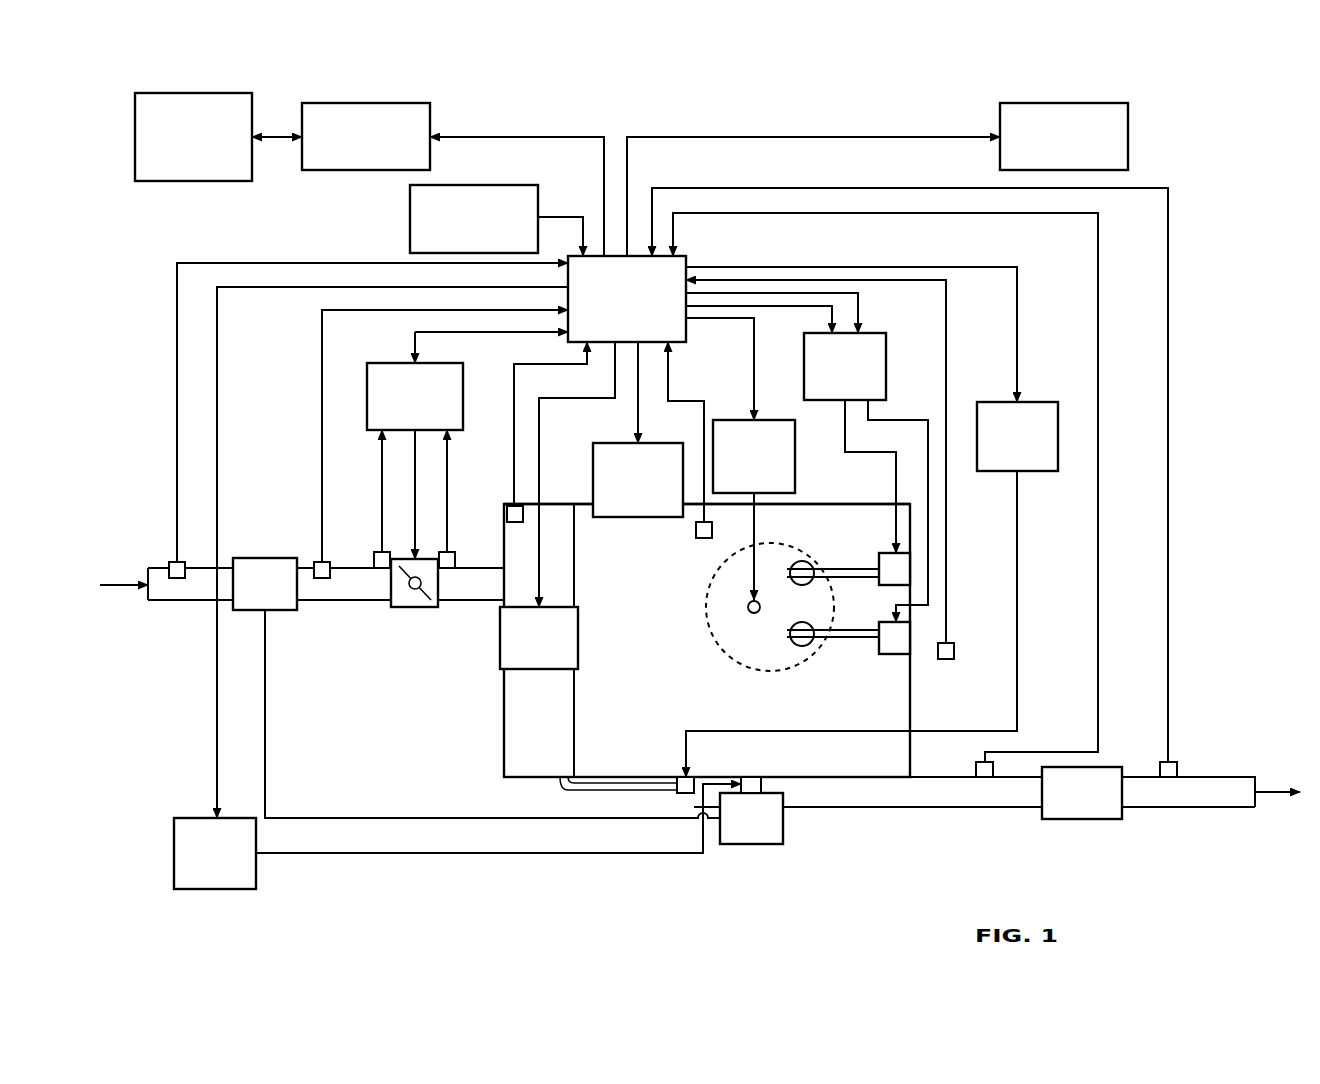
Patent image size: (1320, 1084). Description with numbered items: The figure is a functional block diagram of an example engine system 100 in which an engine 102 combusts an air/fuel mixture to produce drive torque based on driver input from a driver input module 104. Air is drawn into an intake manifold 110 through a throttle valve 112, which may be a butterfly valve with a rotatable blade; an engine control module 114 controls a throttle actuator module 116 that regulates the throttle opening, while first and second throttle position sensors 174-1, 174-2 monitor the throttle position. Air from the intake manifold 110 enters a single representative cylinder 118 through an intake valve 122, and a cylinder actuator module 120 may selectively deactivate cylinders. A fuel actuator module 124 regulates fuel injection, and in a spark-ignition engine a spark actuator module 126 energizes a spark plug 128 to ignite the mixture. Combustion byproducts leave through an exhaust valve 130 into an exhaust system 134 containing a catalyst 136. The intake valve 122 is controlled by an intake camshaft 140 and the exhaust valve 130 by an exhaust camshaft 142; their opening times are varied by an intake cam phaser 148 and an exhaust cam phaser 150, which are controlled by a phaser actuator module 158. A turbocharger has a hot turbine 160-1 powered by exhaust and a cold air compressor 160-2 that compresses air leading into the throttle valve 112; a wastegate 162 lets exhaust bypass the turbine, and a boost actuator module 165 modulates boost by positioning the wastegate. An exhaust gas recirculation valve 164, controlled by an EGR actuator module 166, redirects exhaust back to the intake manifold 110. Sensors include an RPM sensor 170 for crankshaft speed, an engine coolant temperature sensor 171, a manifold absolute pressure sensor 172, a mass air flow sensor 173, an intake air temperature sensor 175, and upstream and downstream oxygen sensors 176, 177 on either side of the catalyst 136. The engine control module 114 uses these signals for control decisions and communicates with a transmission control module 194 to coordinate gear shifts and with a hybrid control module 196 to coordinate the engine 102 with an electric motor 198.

The engine system 100 is at (1228, 105).
The engine 102 is at (815, 504).
The driver input module 104 is at (410, 215).
The intake manifold 110 is at (504, 716).
The throttle valve 112 is at (412, 607).
The engine control module 114 is at (686, 258).
The throttle actuator module 116 is at (390, 363).
The cylinder 118 is at (735, 672).
The cylinder actuator module 120 is at (652, 443).
The intake valve 122 is at (800, 561).
The fuel actuator module 124 is at (562, 669).
The spark actuator module 126 is at (733, 420).
The spark plug 128 is at (748, 607).
The exhaust valve 130 is at (808, 648).
The exhaust system 134 is at (547, 885).
The catalyst 136 is at (1082, 819).
The intake camshaft 140 is at (855, 569).
The exhaust camshaft 142 is at (860, 637).
The intake cam phaser 148 is at (884, 585).
The exhaust cam phaser 150 is at (898, 654).
The phaser actuator module 158 is at (886, 340).
The hot turbine 160-1 is at (783, 828).
The cold air compressor 160-2 is at (285, 610).
The wastegate 162 is at (761, 785).
The exhaust gas recirculation valve 164 is at (684, 795).
The boost actuator module 165 is at (256, 889).
The EGR actuator module 166 is at (992, 402).
The RPM sensor 170 is at (950, 643).
The engine coolant temperature sensor 171 is at (704, 538).
The manifold absolute pressure sensor 172 is at (510, 506).
The mass air flow sensor 173 is at (312, 562).
The first throttle position sensor 174-1 is at (380, 568).
The second throttle position sensor 174-2 is at (446, 568).
The intake air temperature sensor 175 is at (169, 562).
The upstream oxygen sensor 176 is at (985, 777).
The downstream oxygen sensor 177 is at (1168, 777).
The transmission control module 194 is at (1000, 120).
The hybrid control module 196 is at (331, 170).
The electric motor 198 is at (195, 181).